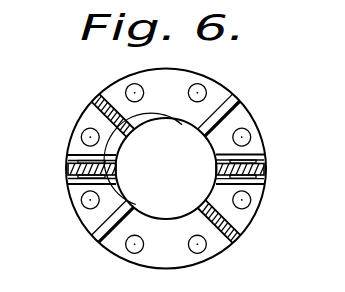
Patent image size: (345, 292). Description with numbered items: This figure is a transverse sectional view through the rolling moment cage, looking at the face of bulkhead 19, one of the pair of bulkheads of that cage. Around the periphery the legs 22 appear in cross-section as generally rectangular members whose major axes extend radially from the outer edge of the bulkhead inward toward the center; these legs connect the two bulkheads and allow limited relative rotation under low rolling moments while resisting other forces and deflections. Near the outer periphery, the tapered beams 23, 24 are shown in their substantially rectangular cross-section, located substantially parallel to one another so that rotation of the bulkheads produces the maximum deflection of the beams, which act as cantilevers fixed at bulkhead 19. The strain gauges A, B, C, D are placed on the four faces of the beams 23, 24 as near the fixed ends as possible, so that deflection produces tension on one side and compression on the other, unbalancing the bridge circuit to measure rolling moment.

The bulkhead 19 is at (178, 80).
The legs 22 is at (236, 99).
The tapered beam 23 is at (113, 165).
The tapered beam 24 is at (217, 163).
The gauge A is at (76, 154).
The gauge B is at (73, 184).
The gauge C is at (265, 152).
The gauge D is at (264, 180).